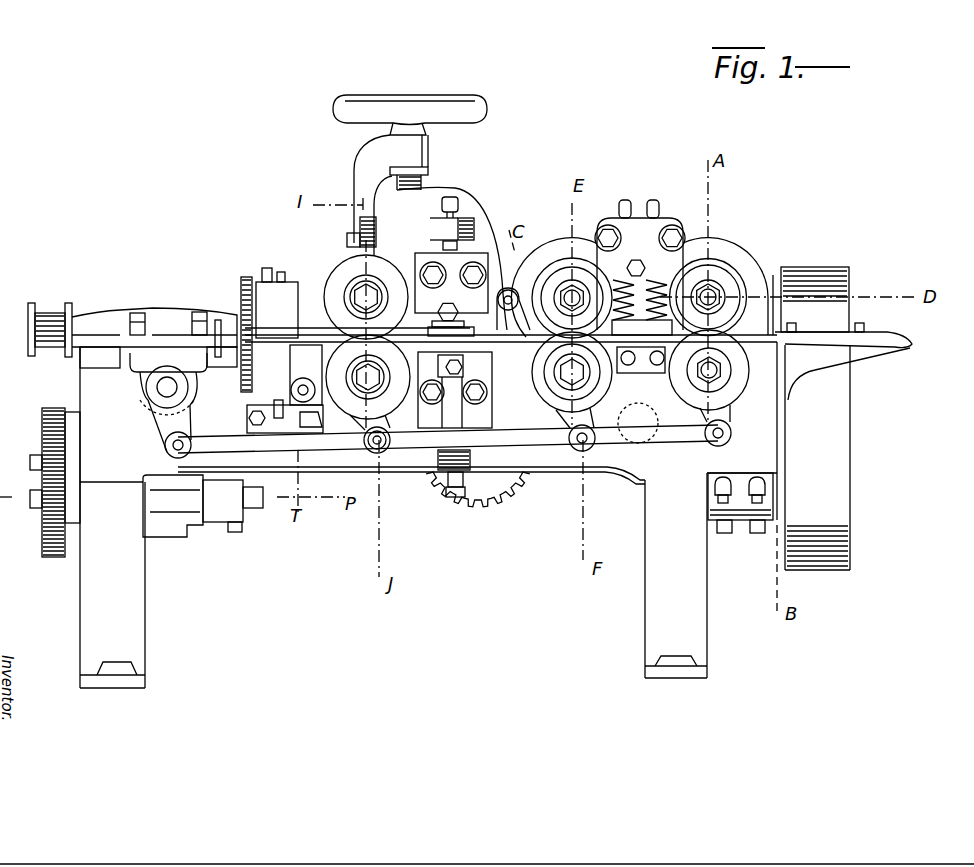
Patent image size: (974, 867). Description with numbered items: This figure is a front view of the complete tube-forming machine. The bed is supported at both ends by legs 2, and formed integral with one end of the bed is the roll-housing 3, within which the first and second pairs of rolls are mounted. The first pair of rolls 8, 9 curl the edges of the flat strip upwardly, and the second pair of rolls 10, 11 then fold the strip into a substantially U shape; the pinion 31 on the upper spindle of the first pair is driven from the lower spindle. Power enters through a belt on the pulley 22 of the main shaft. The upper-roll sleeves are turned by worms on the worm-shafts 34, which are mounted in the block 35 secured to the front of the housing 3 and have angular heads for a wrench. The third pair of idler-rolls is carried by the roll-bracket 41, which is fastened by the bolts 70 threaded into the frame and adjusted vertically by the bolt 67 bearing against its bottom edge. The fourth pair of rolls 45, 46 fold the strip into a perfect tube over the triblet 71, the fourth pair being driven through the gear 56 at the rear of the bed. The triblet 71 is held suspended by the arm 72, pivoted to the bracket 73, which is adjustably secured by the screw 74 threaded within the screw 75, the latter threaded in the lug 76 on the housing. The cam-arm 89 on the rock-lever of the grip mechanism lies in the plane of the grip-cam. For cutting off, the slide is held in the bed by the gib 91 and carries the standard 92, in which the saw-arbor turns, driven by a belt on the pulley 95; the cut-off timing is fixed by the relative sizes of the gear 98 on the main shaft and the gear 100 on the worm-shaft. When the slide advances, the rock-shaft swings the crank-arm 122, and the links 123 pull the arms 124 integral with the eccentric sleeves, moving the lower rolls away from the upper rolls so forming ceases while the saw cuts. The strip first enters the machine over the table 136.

The legs 2 is at (138, 633).
The roll-housing 3 is at (755, 275).
The upper roll of first pair 8 is at (735, 270).
The lower roll of first pair 9 is at (717, 376).
The upper roll of second pair 10 is at (567, 262).
The lower roll of second pair 11 is at (557, 408).
The pulley 22 is at (848, 438).
The pinion 31 is at (479, 312).
The worm-shafts 34 is at (623, 203).
The block 35 is at (627, 228).
The roll-bracket 41 is at (490, 378).
The upper roll of fourth pair 45 is at (345, 260).
The lower roll of fourth pair 46 is at (363, 420).
The gear 56 is at (500, 498).
The bolt 67 is at (458, 498).
The bolts 70 is at (492, 400).
The triblet 71 is at (308, 305).
The arm 72 is at (518, 312).
The bracket 73 is at (425, 256).
The screw 74 is at (450, 197).
The screw 75 is at (466, 216).
The lug 76 is at (490, 232).
The cam-arm 89 is at (293, 423).
The gib 91 is at (102, 357).
The standard 92 is at (113, 311).
The pulley 95 is at (47, 307).
The gear 98 is at (42, 412).
The gear 100 is at (48, 540).
The crank-arm 122 is at (193, 420).
The links 123 is at (239, 448).
The arms 124 is at (607, 410).
The table 136 is at (908, 337).